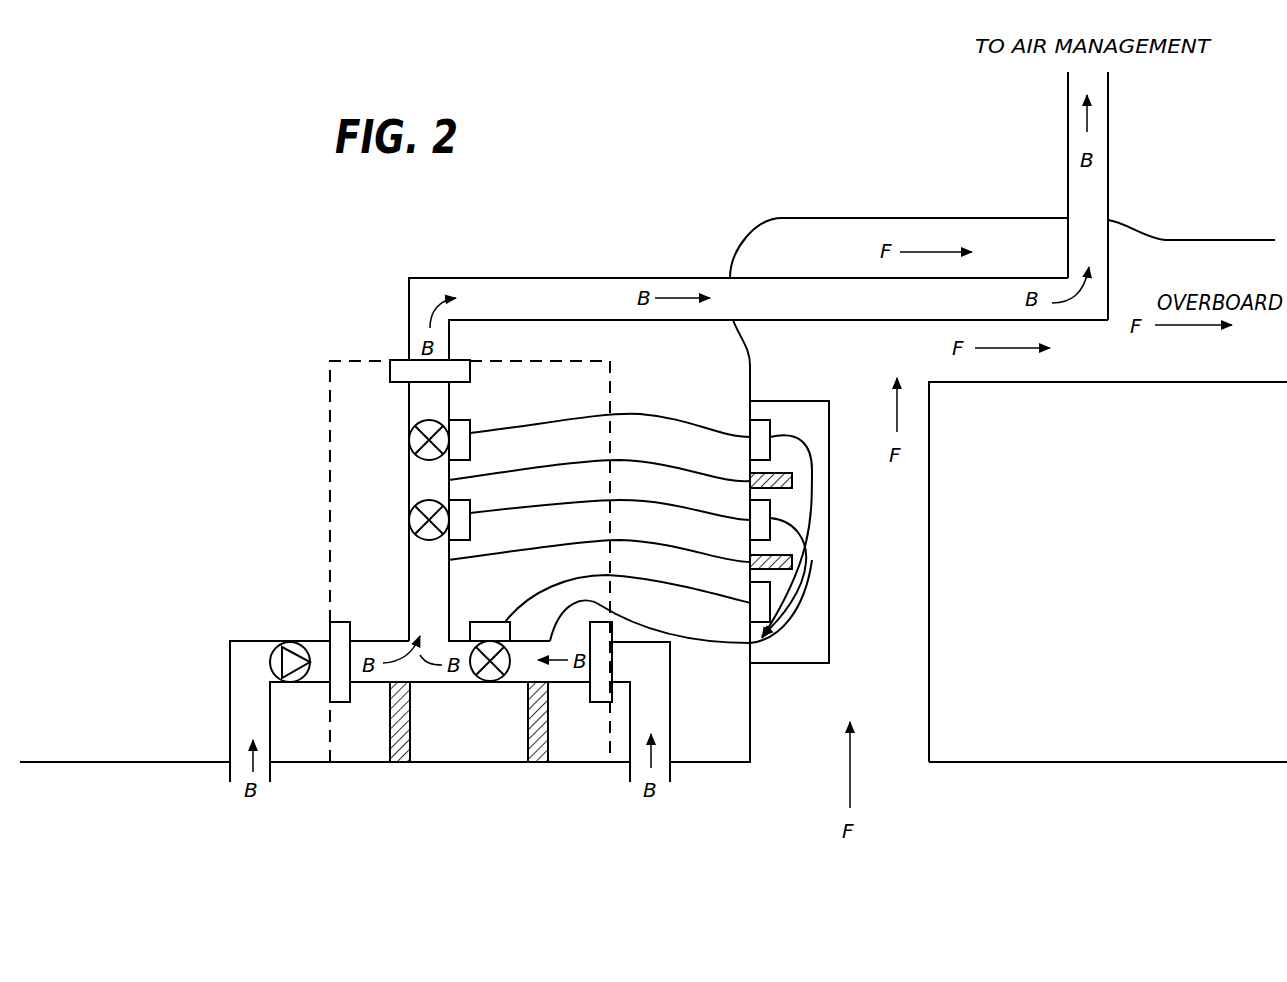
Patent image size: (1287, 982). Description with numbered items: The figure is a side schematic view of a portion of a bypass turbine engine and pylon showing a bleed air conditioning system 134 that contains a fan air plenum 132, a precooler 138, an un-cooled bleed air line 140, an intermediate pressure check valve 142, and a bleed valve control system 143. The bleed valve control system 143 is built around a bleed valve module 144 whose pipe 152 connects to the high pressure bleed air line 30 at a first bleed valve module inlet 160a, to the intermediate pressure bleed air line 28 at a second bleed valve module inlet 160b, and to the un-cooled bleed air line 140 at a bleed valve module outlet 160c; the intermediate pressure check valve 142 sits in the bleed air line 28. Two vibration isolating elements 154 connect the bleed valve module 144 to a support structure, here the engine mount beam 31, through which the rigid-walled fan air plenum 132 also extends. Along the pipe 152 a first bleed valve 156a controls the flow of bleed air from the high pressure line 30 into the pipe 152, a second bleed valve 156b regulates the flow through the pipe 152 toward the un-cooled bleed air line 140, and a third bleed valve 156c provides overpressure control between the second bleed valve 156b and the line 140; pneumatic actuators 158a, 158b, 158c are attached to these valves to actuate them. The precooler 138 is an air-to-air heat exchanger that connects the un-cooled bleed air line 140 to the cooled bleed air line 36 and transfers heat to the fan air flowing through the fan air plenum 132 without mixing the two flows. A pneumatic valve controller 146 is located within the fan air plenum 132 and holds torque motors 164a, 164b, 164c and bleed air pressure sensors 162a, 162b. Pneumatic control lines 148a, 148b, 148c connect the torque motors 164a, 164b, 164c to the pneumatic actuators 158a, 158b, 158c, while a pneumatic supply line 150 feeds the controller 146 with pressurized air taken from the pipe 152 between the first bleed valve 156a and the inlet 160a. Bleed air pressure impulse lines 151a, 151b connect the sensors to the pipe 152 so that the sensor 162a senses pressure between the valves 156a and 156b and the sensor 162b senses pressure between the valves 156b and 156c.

The intermediate pressure bleed air line 28 is at (230, 697).
The high pressure bleed air line 30 is at (672, 722).
The engine mount beam 31 is at (152, 760).
The cooled bleed air line 36 is at (1108, 160).
The fan air plenum 132 is at (929, 655).
The bleed air conditioning system 134 is at (268, 244).
The precooler 138 is at (896, 216).
The un-cooled bleed air line 140 is at (596, 276).
The intermediate pressure check valve 142 is at (292, 640).
The bleed valve control system 143 is at (193, 404).
The bleed valve module 144 is at (322, 379).
The pneumatic valve controller 146 is at (798, 668).
The pneumatic control line 148a is at (688, 586).
The pneumatic control line 148b is at (685, 522).
The pneumatic control line 148c is at (687, 436).
The pneumatic supply line 150 is at (714, 646).
The bleed air pressure impulse line 151a is at (683, 560).
The bleed air pressure impulse line 151b is at (688, 481).
The pipe 152 is at (407, 617).
The vibration isolating element 154 is at (400, 762).
The first bleed valve 156a is at (489, 682).
The second bleed valve 156b is at (408, 520).
The third bleed valve 156c is at (408, 440).
The pneumatic actuator 158a is at (478, 620).
The pneumatic actuator 158b is at (470, 515).
The pneumatic actuator 158c is at (470, 433).
The first bleed valve module inlet 160a is at (592, 702).
The second bleed valve module inlet 160b is at (350, 702).
The bleed valve module outlet 160c is at (390, 375).
The bleed air pressure sensor 162a is at (792, 562).
The bleed air pressure sensor 162b is at (792, 480).
The torque motor 164a is at (771, 600).
The torque motor 164b is at (771, 518).
The torque motor 164c is at (771, 420).